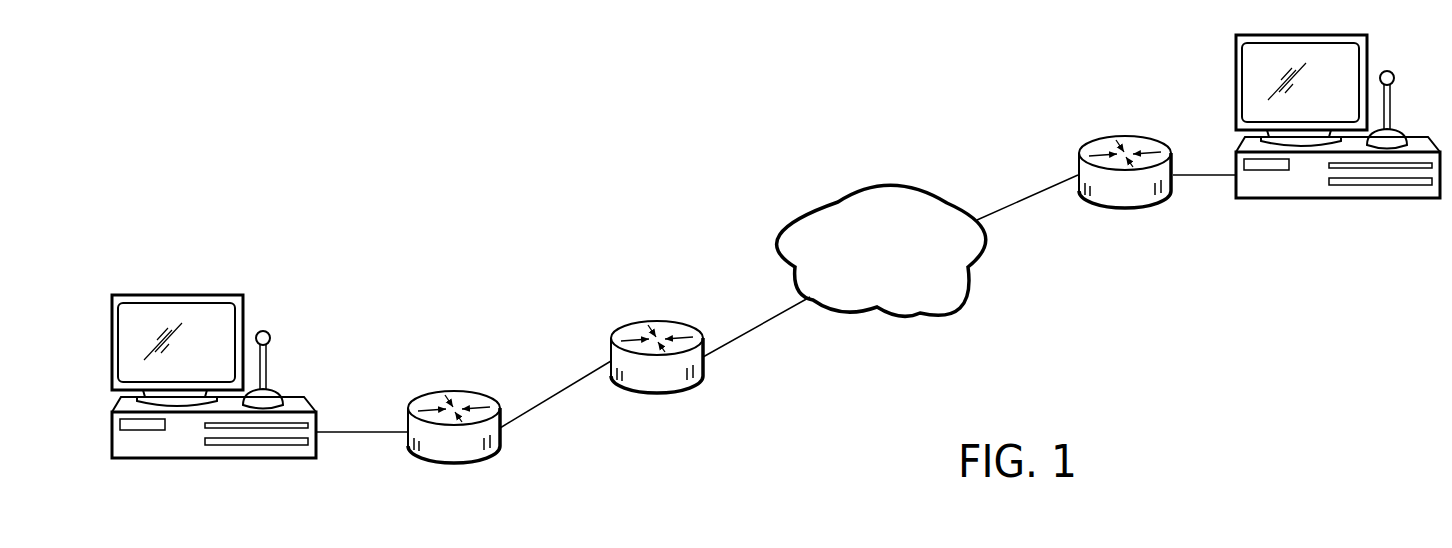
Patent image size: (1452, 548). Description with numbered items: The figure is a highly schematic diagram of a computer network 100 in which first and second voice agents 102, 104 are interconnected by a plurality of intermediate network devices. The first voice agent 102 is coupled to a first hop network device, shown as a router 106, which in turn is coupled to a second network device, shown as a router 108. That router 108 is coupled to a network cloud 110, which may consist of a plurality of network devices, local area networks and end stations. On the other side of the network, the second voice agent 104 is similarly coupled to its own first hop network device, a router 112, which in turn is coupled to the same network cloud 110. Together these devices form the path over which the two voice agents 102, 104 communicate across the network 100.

The computer network 100 is at (698, 121).
The first voice agent 102 is at (178, 460).
The second voice agent 104 is at (1303, 200).
The router 106 is at (453, 466).
The router 108 is at (657, 396).
The network cloud 110 is at (923, 317).
The router 112 is at (1127, 210).